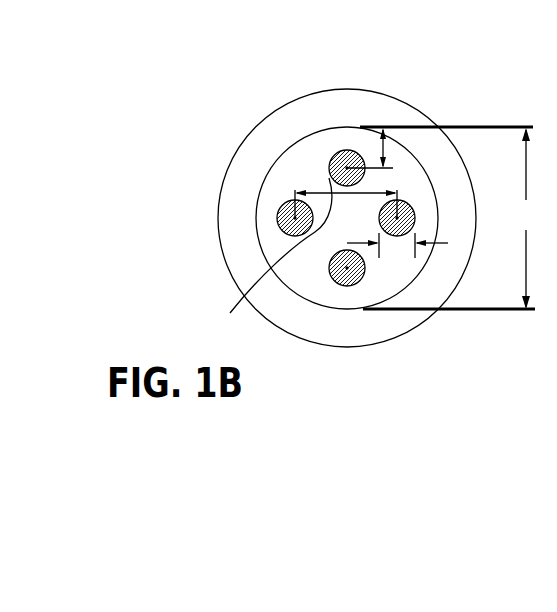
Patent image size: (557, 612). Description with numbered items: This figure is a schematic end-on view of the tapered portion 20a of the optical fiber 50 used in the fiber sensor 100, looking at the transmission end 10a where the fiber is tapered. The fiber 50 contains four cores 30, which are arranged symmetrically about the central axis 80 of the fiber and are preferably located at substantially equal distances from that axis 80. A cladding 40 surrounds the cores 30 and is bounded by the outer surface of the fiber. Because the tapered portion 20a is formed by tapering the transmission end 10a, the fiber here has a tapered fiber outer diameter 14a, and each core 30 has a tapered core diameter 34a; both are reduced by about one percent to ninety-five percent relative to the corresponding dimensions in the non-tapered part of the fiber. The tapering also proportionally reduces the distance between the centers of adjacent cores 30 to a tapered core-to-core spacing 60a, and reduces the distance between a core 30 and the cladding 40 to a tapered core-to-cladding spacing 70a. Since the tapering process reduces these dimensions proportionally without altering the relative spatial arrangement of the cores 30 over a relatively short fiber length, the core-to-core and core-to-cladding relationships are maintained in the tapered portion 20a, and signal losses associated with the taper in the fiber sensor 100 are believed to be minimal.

The fiber sensor 100 is at (453, 102).
The optical fiber 50 is at (328, 128).
The tapered portion 20a is at (256, 157).
The cores 30 is at (285, 201).
The transmission end 10a is at (266, 217).
The tapered core-to-core spacing 60a is at (347, 220).
The central axis 80 is at (274, 259).
The tapered core-to-cladding spacing 70a is at (385, 148).
The cladding 40 is at (418, 194).
The tapered fiber outer diameter 14a is at (454, 218).
The tapered core diameters 34a is at (437, 245).